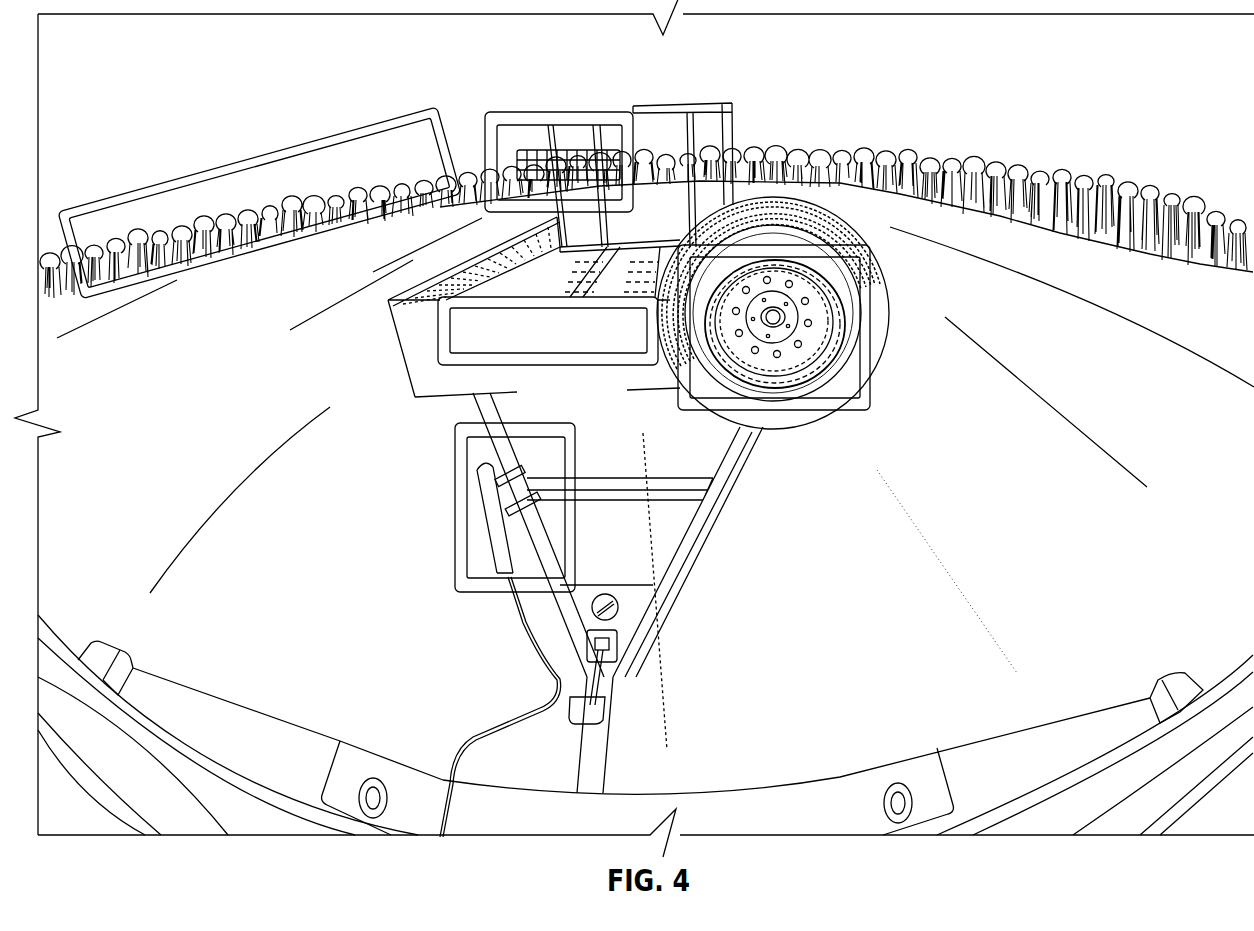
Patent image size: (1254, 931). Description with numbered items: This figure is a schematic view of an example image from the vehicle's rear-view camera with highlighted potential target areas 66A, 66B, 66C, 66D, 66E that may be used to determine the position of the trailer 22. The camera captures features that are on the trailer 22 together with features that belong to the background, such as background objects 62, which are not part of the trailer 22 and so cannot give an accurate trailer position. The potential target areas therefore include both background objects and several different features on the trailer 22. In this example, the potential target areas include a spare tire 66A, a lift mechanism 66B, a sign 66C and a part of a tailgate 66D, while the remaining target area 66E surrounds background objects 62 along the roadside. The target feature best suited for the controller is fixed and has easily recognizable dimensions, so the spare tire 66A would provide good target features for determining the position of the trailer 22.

The trailer 22 is at (675, 562).
The background objects 62 is at (272, 193).
The spare tire 66A is at (860, 363).
The lift mechanism 66B is at (463, 517).
The sign 66C is at (441, 345).
The part of a tailgate 66D is at (619, 130).
The potential target area 66E is at (413, 137).